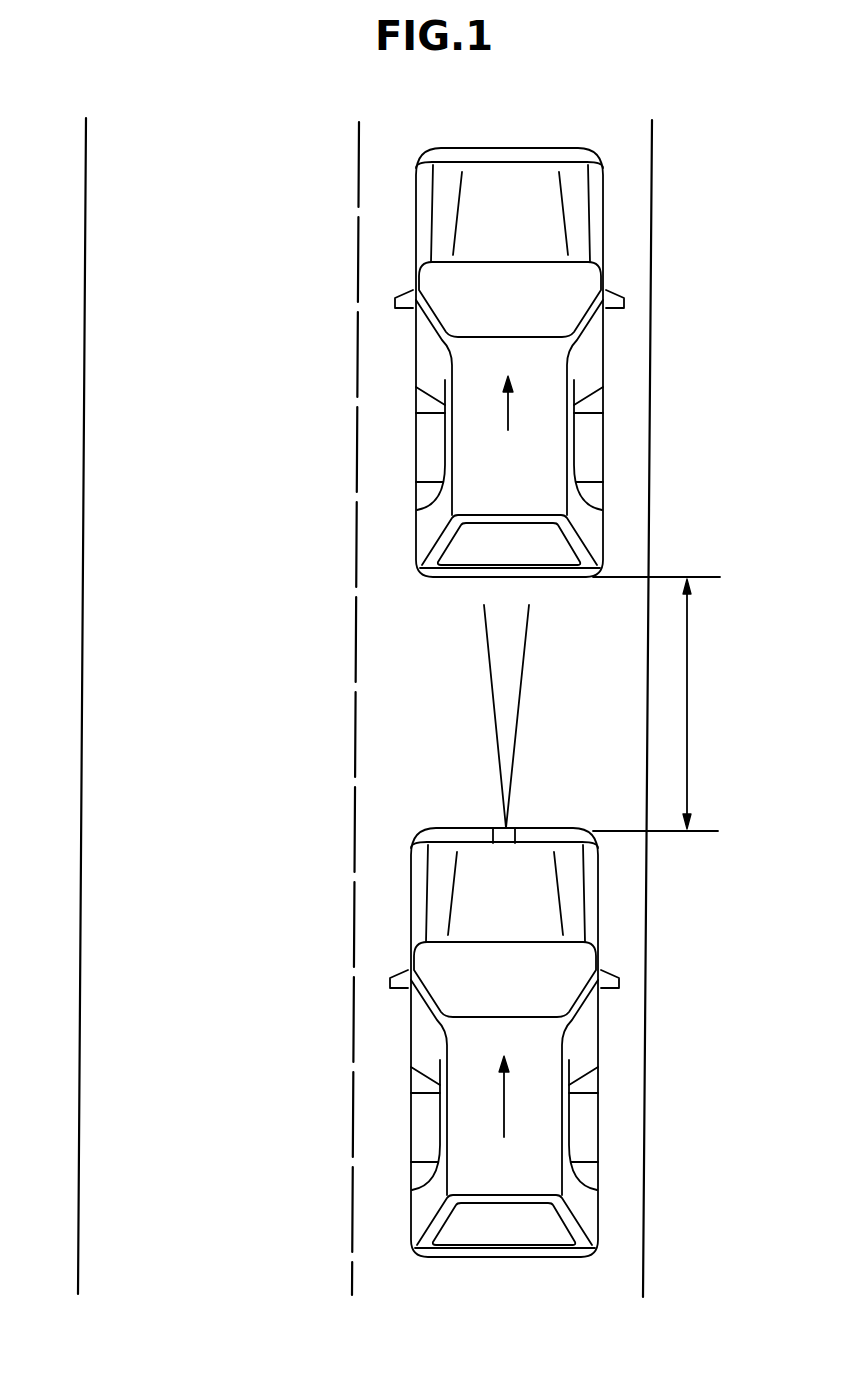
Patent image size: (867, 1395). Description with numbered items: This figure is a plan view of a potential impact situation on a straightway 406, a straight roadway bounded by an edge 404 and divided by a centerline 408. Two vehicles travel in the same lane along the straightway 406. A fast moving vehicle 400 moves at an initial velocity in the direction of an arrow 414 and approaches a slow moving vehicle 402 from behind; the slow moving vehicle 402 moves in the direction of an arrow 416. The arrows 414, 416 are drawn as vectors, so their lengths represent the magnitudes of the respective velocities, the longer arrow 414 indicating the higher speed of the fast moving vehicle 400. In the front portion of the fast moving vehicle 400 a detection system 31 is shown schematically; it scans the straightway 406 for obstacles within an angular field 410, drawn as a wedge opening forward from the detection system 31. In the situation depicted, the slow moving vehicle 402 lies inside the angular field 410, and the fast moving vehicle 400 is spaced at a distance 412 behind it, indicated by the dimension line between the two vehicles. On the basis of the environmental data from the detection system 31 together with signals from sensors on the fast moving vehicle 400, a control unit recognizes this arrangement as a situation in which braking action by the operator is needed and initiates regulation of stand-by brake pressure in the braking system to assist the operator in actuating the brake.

The fast moving vehicle 400 is at (583, 1217).
The slow moving vehicle 402 is at (543, 242).
The edge 404 is at (652, 171).
The straightway 406 is at (195, 202).
The centerline 408 is at (359, 262).
The angular field 410 is at (518, 720).
The distance 412 is at (687, 712).
The arrow 414 is at (504, 1105).
The arrow 416 is at (510, 408).
The detection system 31 is at (505, 838).